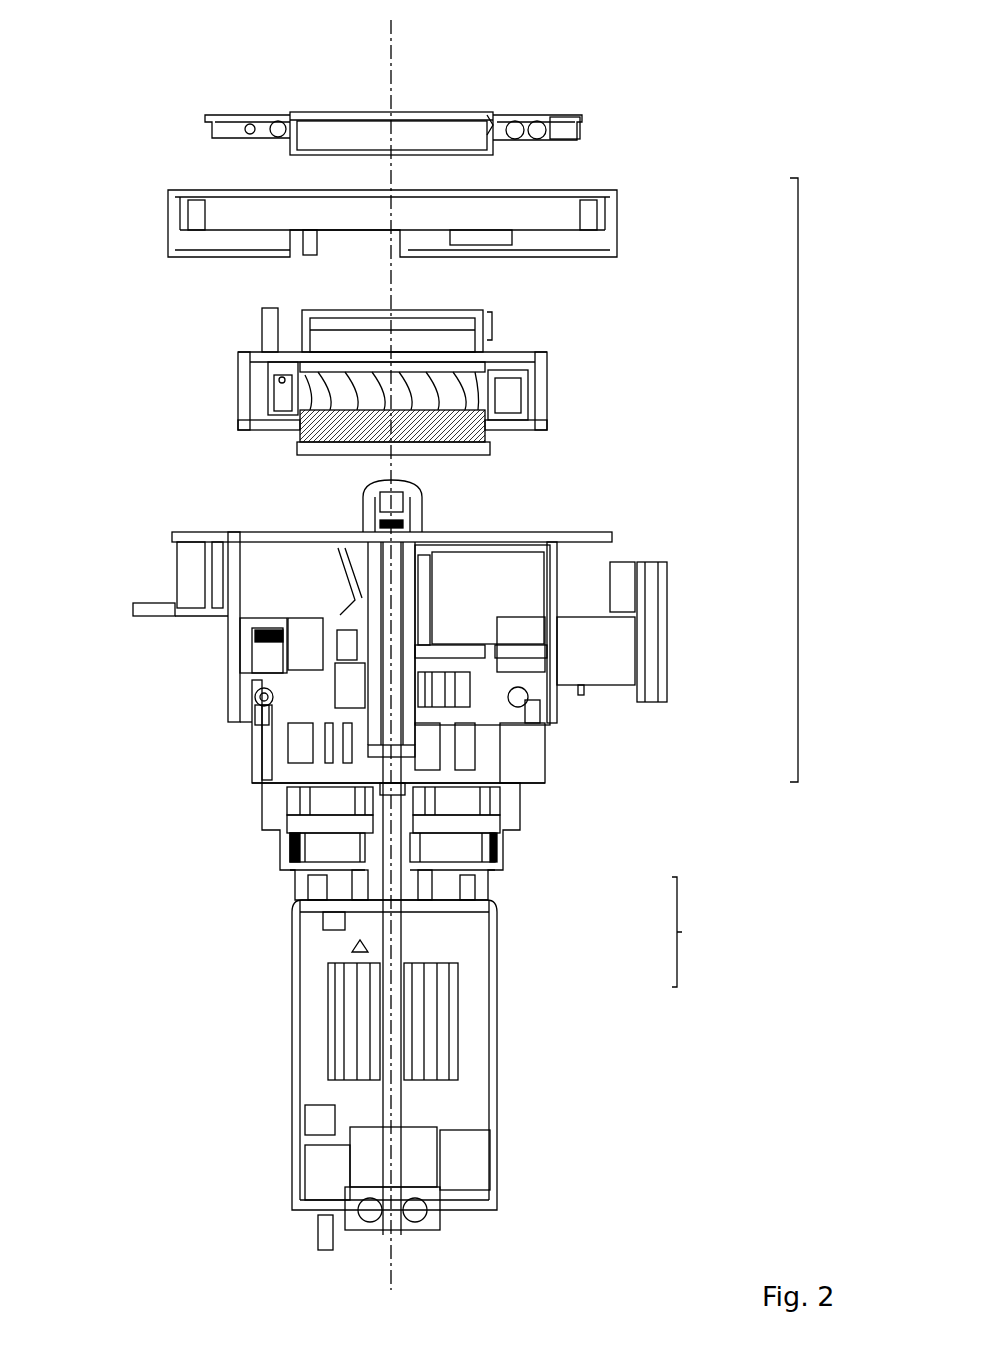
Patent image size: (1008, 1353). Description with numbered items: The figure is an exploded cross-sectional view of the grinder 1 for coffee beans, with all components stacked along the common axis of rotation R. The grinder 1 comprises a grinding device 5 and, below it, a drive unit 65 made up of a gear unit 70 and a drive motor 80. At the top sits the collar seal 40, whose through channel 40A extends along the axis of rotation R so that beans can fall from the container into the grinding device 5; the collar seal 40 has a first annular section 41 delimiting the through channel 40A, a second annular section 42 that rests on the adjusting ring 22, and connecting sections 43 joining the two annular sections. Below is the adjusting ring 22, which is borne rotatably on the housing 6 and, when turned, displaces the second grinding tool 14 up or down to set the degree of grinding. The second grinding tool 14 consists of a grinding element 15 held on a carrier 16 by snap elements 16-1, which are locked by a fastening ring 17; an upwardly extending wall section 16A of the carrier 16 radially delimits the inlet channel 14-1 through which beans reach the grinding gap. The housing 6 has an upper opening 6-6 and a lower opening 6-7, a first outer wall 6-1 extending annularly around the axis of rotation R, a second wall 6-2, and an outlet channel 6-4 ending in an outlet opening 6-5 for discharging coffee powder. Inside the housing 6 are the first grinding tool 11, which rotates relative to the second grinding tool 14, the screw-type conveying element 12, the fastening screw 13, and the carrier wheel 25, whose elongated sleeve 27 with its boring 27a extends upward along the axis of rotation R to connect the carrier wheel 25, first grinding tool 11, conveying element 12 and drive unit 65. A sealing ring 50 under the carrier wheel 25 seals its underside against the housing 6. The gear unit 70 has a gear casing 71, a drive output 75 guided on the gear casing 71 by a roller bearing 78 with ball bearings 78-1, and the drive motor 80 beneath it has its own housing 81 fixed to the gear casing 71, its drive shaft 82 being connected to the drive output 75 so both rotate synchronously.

The grinder 1 is at (846, 28).
The axis of rotation R is at (396, 72).
The grinding device 5 is at (813, 480).
The housing 6 is at (414, 856).
The first wall 6-1 is at (236, 590).
The second wall 6-2 is at (290, 619).
The outlet channel 6-4 is at (608, 660).
The outlet opening 6-5 is at (672, 658).
The upper opening 6-6 is at (262, 530).
The lower opening 6-7 is at (515, 770).
The first grinding tool 11 is at (432, 610).
The conveying element 12 is at (418, 522).
The fastening screw 13 is at (385, 553).
The second grinding tool 14 is at (446, 374).
The inlet channel 14-1 is at (352, 343).
The grinding element 15 is at (300, 432).
The carrier 16 is at (238, 362).
The snap elements 16-1 is at (283, 383).
The wall section 16A is at (521, 324).
The fastening ring 17 is at (497, 425).
The adjusting ring 22 is at (612, 205).
The carrier wheel 25 is at (325, 655).
The sleeve 27 is at (412, 603).
The boring 27a is at (406, 577).
The collar seal 40 is at (475, 120).
The through channel 40A is at (349, 138).
The first annular section 41 is at (483, 117).
The second annular section 42 is at (560, 118).
The connecting section 43 is at (270, 136).
The sealing ring 50 is at (480, 690).
The drive unit 65 is at (700, 932).
The gear unit 70 is at (528, 810).
The gear casing 71 is at (258, 782).
The drive output 75 is at (268, 718).
The roller bearing 78 is at (262, 696).
The ball bearings 78-1 is at (248, 722).
The drive motor 80 is at (425, 1075).
The housing 81 is at (300, 1046).
The drive shaft 82 is at (380, 1096).